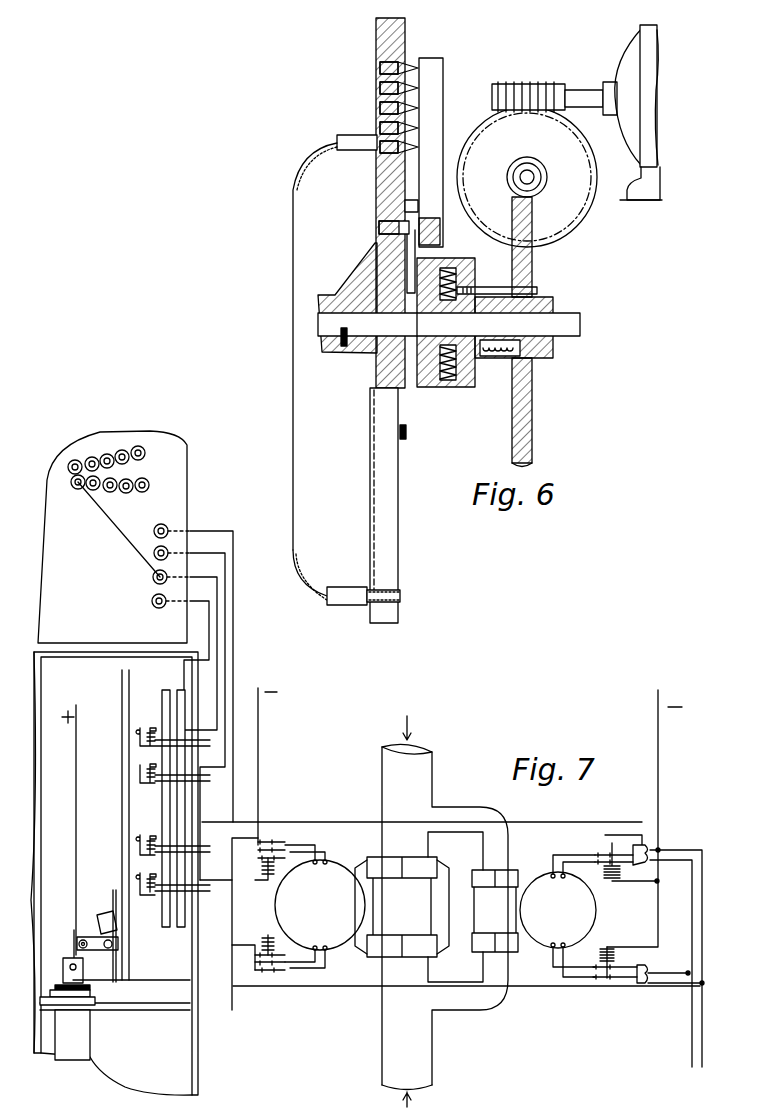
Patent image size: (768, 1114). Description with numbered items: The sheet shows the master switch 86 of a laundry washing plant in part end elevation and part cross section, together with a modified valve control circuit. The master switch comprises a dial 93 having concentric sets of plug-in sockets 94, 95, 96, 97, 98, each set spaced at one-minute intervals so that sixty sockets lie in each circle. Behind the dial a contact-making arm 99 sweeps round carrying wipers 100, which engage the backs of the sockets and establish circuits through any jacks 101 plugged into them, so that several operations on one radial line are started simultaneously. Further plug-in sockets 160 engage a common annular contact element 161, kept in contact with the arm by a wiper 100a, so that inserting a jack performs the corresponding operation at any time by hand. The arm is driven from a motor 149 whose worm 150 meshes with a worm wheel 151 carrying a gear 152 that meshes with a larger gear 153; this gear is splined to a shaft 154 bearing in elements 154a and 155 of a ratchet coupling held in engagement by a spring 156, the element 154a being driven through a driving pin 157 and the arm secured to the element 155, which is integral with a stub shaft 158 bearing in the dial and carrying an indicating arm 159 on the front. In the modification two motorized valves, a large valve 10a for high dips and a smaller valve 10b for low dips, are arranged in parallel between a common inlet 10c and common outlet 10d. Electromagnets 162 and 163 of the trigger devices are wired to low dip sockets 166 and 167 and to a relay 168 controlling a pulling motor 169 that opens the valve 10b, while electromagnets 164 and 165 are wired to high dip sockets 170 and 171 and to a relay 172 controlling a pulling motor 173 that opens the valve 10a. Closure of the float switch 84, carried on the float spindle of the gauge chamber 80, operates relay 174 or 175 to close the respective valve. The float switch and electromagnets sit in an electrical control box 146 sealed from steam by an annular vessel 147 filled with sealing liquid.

In FIG. 6, the set of plug-in sockets 94 is at (380, 67).
In FIG. 6, the set of plug-in sockets 95 is at (380, 87).
In FIG. 6, the set of plug-in sockets 96 is at (380, 107).
In FIG. 6, the set of plug-in sockets 97 is at (380, 127).
In FIG. 6, the set of plug-in sockets 98 is at (385, 149).
In FIG. 6, the contact-making arm 99 is at (436, 120).
In FIG. 6, the wipers 100 is at (414, 72).
In FIG. 6, the wiper 100a is at (410, 206).
In FIG. 6, the jacks 101 is at (350, 140).
In FIG. 6, the motor 149 is at (651, 112).
In FIG. 6, the worm 150 is at (532, 84).
In FIG. 6, the worm wheel 151 is at (568, 196).
In FIG. 6, the gear 152 is at (528, 165).
In FIG. 6, the larger gear 153 is at (534, 415).
In FIG. 6, the shaft 154 is at (566, 325).
In FIG. 6, the ratchet coupling element 154a is at (470, 386).
In FIG. 6, the ratchet coupling element 155 is at (431, 390).
In FIG. 6, the spring 156 is at (492, 357).
In FIG. 6, the driving pin 157 is at (536, 290).
In FIG. 6, the stub shaft 158 is at (372, 342).
In FIG. 6, the indicating arm 159 is at (362, 280).
In FIG. 6, the plug-in sockets 160 is at (380, 228).
In FIG. 6, the annular contact element 161 is at (407, 432).
In FIG. 6, the dial 93 is at (384, 520).
In FIG. 7, the dial 93 is at (167, 445).
In FIG. 7, the master switch 86 is at (92, 427).
In FIG. 7, the low dip socket 166 is at (168, 527).
In FIG. 7, the low dip socket 167 is at (154, 553).
In FIG. 7, the high dip socket 170 is at (153, 577).
In FIG. 7, the high dip socket 171 is at (152, 601).
In FIG. 7, the electromagnet 165 is at (145, 733).
In FIG. 7, the electromagnet 164 is at (143, 768).
In FIG. 7, the electromagnet 163 is at (143, 846).
In FIG. 7, the electromagnet 162 is at (143, 884).
In FIG. 7, the float switch 84 is at (120, 950).
In FIG. 7, the electrical control box 146 is at (190, 987).
In FIG. 7, the annular vessel 147 is at (75, 1041).
In FIG. 7, the gauge chamber 80 is at (193, 1052).
In FIG. 7, the relay 172 is at (272, 842).
In FIG. 7, the pulling motor 173 is at (320, 906).
In FIG. 7, the relay 174 is at (268, 972).
In FIG. 7, the large valve 10a is at (419, 907).
In FIG. 7, the smaller valve 10b is at (495, 911).
In FIG. 7, the common inlet 10c is at (418, 793).
In FIG. 7, the common outlet 10d is at (425, 1040).
In FIG. 7, the relay 168 is at (610, 845).
In FIG. 7, the pulling motor 169 is at (558, 916).
In FIG. 7, the relay 175 is at (607, 986).